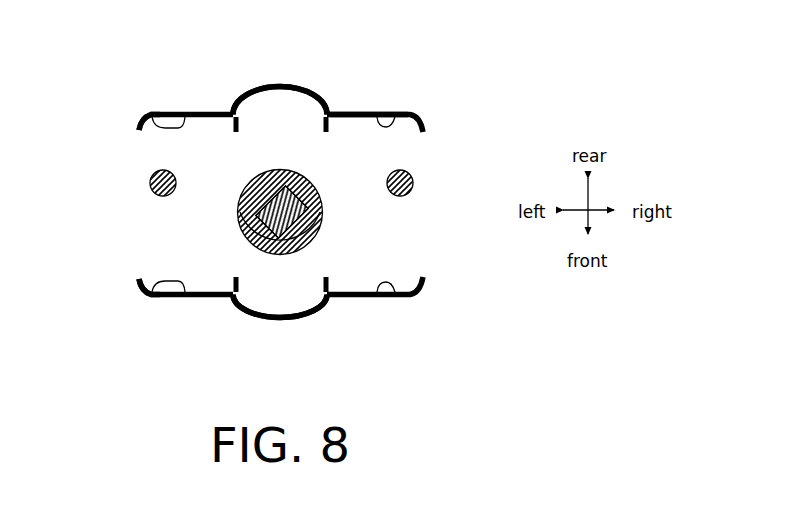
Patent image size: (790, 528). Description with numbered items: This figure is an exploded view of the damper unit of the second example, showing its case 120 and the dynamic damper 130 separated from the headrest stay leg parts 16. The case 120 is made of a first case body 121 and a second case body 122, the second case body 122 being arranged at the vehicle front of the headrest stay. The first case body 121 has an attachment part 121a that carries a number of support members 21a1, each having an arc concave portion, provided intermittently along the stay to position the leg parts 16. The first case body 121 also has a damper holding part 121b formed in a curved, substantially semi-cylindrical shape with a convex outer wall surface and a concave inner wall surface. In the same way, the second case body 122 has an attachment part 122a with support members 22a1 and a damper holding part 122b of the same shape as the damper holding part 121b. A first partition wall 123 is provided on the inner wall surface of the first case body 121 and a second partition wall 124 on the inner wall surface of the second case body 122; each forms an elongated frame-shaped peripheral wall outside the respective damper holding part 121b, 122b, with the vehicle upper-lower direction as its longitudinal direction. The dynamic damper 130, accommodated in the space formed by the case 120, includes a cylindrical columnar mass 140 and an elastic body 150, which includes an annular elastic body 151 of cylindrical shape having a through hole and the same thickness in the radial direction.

The case 120 is at (395, 112).
The first case body 121 is at (353, 110).
The attachment part 121a is at (142, 108).
The support member 21a1 is at (175, 110).
The first partition wall 123 is at (219, 113).
The damper holding part 121b is at (255, 92).
The second case body 122 is at (352, 299).
The attachment part 122a is at (148, 293).
The support member 22a1 is at (176, 298).
The second partition wall 124 is at (222, 298).
The damper holding part 122b is at (258, 316).
The leg part 16 is at (149, 178).
The dynamic damper 130 is at (375, 205).
The elastic body 150 is at (323, 199).
The mass 140 is at (318, 230).
The annular elastic body 151 is at (304, 189).